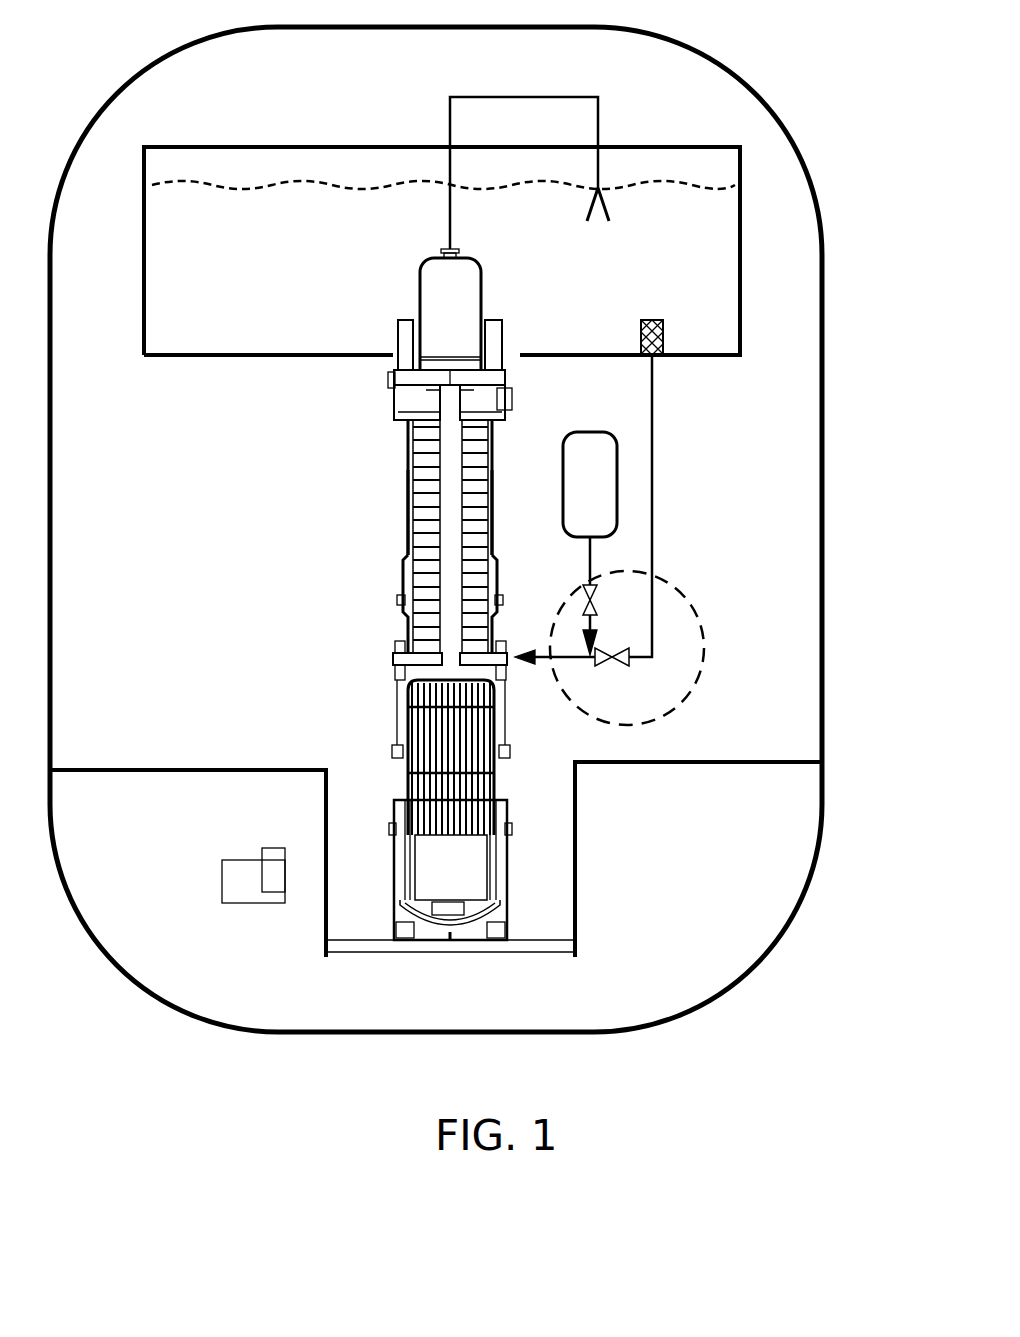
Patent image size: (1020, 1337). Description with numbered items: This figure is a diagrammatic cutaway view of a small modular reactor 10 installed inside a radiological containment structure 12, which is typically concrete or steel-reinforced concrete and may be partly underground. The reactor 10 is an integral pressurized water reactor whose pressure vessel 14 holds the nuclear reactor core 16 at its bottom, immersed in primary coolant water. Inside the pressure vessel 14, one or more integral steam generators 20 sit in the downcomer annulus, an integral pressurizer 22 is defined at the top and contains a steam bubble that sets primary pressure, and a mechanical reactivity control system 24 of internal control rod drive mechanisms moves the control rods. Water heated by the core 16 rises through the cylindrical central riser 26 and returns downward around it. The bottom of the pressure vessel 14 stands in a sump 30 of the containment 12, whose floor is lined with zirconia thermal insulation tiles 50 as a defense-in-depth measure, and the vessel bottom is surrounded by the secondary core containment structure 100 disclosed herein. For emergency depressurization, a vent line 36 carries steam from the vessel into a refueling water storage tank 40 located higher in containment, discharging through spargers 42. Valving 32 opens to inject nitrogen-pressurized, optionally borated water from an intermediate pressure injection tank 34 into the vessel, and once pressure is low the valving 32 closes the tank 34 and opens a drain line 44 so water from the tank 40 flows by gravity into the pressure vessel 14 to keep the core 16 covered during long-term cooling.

The small modular reactor 10 is at (322, 492).
The radiological containment structure 12 is at (760, 107).
The pressure vessel 14 is at (408, 458).
The nuclear reactor core 16 is at (467, 886).
The integral steam generators 20 is at (430, 537).
The integral pressurizer 22 is at (464, 307).
The mechanical reactivity control system 24 is at (455, 728).
The central riser 26 is at (455, 603).
The sump 30 is at (356, 790).
The valving 32 is at (705, 650).
The intermediate pressure injection tank 34 is at (605, 484).
The vent line 36 is at (450, 125).
The refueling water storage tank 40 is at (288, 270).
The spargers 42 is at (618, 205).
The drain line 44 is at (652, 530).
The zirconia thermal insulation tiles 50 is at (535, 940).
The secondary core containment structure 100 is at (525, 868).